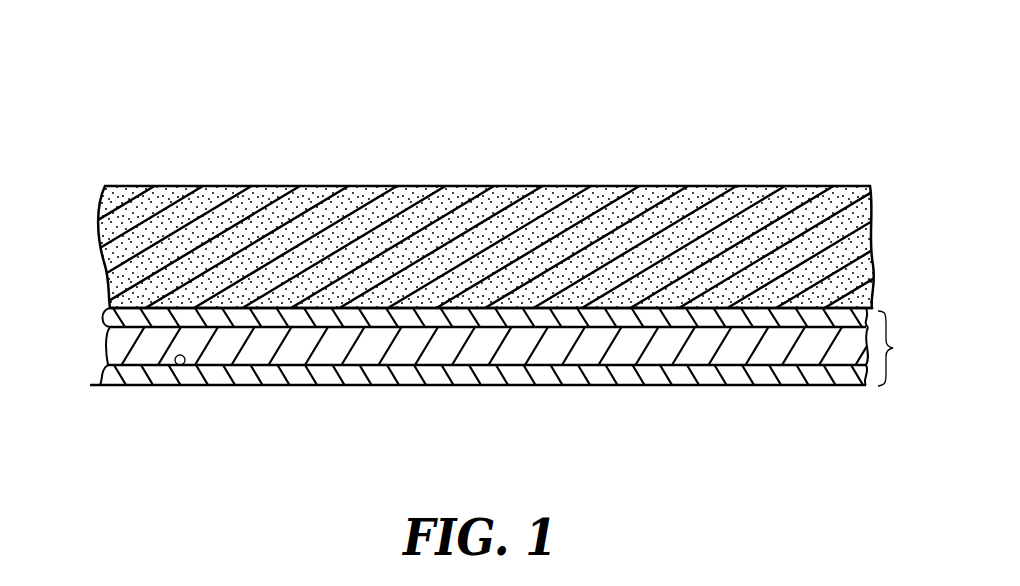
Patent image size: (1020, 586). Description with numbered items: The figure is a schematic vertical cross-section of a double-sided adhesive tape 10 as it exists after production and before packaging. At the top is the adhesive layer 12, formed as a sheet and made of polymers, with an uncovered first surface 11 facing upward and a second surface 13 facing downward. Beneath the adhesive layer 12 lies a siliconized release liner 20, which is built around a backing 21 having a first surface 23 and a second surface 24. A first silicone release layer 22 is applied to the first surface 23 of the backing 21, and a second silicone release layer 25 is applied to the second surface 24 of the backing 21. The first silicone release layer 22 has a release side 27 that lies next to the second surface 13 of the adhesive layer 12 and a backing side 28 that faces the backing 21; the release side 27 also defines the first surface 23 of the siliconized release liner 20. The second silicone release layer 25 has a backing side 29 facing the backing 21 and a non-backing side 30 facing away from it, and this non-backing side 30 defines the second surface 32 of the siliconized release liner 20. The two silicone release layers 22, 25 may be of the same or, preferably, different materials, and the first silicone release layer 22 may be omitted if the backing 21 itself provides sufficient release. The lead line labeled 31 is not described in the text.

The double-sided adhesive tape 10 is at (652, 104).
The first surface 11 is at (210, 186).
The adhesive layer 12 is at (274, 222).
The second surface 13 is at (120, 320).
The siliconized release liner 20 is at (907, 348).
The backing 21 is at (160, 352).
The first silicone release layer 22 is at (372, 318).
The first surface 23 is at (473, 327).
The second surface 24 is at (549, 367).
The second silicone release layer 25 is at (620, 375).
The release side 27 is at (705, 312).
The backing side 28 is at (100, 336).
The backing side 29 is at (180, 366).
The non-backing side 30 is at (245, 385).
The bond region 31 is at (790, 305).
The second surface 32 is at (812, 385).